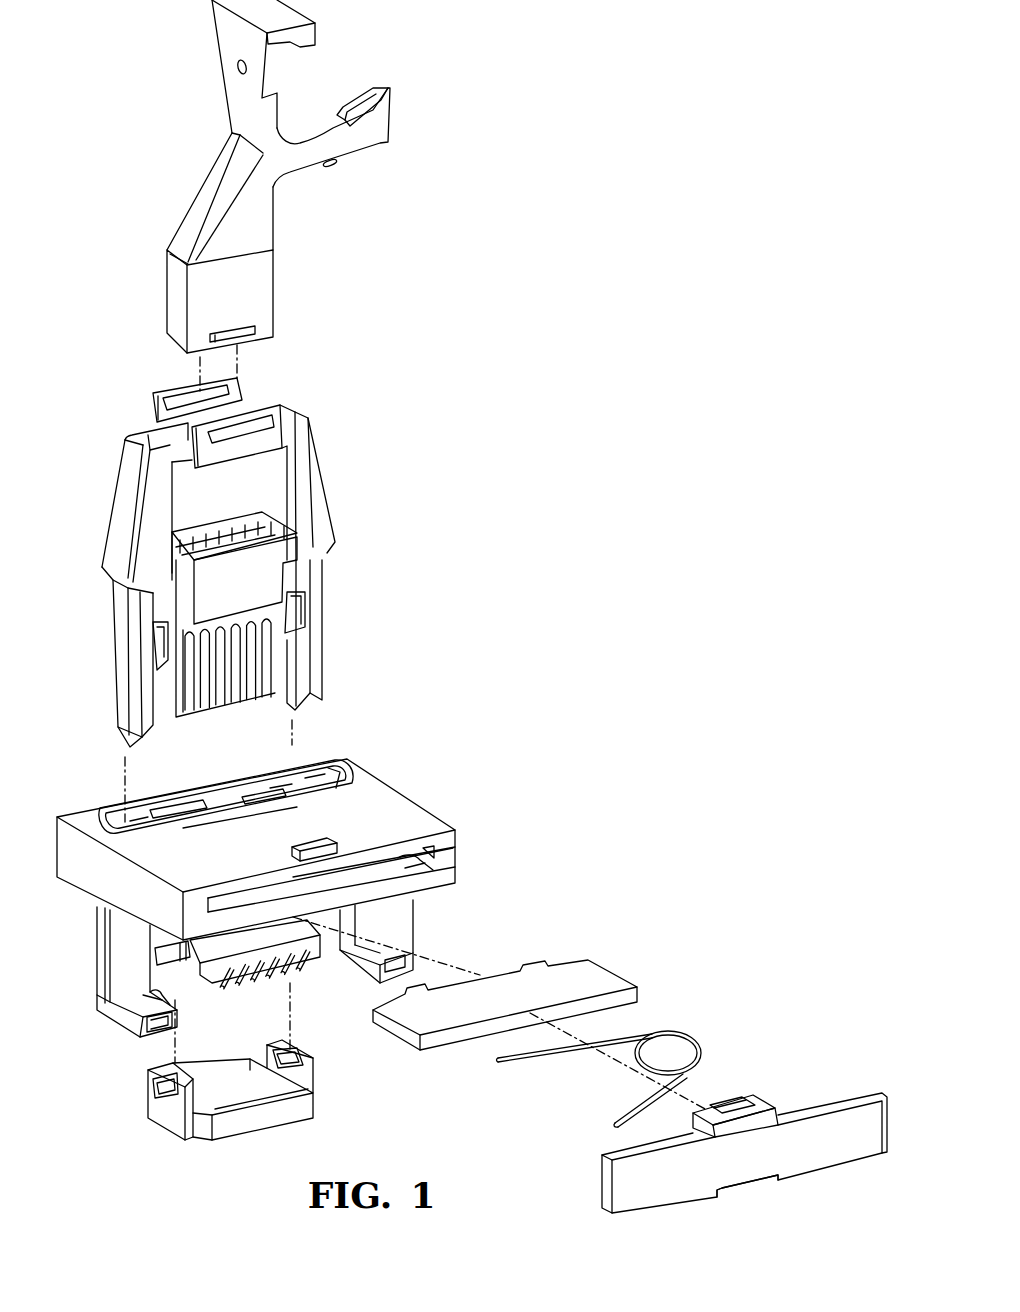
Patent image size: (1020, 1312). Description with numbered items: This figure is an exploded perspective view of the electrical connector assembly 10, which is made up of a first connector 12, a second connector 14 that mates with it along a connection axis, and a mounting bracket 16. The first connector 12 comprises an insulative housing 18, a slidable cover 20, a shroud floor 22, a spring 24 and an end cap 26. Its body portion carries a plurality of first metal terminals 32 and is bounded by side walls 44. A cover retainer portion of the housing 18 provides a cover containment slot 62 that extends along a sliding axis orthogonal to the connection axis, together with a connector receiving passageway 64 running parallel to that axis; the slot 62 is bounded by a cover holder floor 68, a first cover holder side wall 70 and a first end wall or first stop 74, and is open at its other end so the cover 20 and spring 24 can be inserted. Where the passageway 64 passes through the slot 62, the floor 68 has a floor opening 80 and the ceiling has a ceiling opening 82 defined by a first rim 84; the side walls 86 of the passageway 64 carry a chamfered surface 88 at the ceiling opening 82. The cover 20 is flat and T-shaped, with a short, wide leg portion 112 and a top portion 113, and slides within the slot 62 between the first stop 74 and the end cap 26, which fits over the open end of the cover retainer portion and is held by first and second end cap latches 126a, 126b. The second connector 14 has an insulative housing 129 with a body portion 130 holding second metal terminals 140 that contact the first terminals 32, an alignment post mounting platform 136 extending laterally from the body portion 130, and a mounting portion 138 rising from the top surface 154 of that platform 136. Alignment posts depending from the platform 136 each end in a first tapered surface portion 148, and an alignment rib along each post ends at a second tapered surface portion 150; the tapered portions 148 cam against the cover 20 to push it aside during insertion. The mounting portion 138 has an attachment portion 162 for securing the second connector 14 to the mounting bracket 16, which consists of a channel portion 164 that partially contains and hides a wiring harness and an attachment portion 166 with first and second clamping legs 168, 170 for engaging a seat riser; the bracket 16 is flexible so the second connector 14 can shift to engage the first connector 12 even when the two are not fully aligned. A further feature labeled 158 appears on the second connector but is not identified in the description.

The electrical connector assembly 10 is at (517, 439).
The first connector 12 is at (624, 874).
The second connector 14 is at (376, 542).
The mounting bracket 16 is at (266, 176).
The insulative housing 18 is at (297, 879).
The slidable cover 20 is at (554, 988).
The shroud floor 22 is at (166, 1155).
The spring 24 is at (708, 1031).
The end cap 26 is at (689, 1151).
The first metal terminal 32 is at (264, 1000).
The side walls 44 is at (123, 813).
The cover containment slot 62 is at (382, 872).
The connector receiving passageway 64 is at (272, 798).
The cover holder floor 68 is at (405, 870).
The first cover holder side wall 70 is at (435, 862).
The cover holder first end wall 74 is at (248, 802).
The floor opening 80 is at (337, 840).
The ceiling opening 82 is at (325, 795).
The first rim 84 is at (337, 788).
The side walls of the mating connector receiving passageway 86 is at (147, 822).
The chamfered surface 88 is at (175, 812).
The leg portion 112 is at (407, 992).
The top portion 113 is at (566, 977).
The first end cap latch 126a is at (757, 1098).
The second end cap latch 126b is at (712, 1194).
The insulative housing 129 is at (263, 608).
The body portion 130 is at (243, 578).
The alignment post mounting platform 136 is at (107, 573).
The mounting portion 138 is at (231, 499).
The second metal terminals 140 is at (220, 664).
The first tapered surface portion 148 is at (312, 706).
The second tapered surface portion 150 is at (118, 683).
The top surface 154 is at (325, 542).
The retention frame 158 is at (242, 404).
The attachment portion 162 is at (157, 392).
The channel portion 164 is at (247, 287).
The attachment portion 166 is at (217, 165).
The first clamping leg 168 is at (317, 33).
The second clamping leg 170 is at (370, 87).